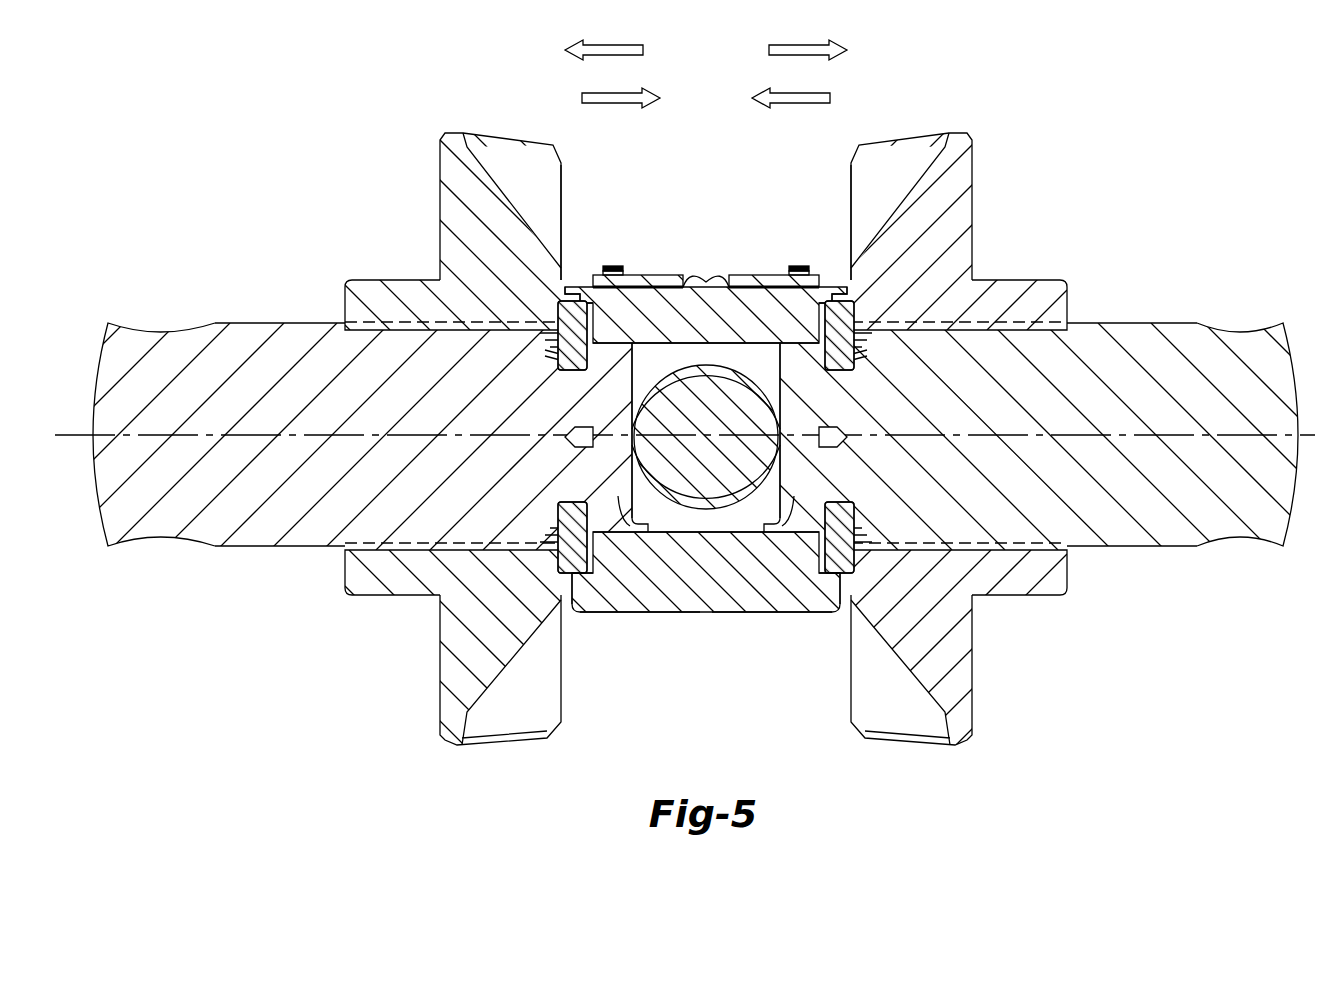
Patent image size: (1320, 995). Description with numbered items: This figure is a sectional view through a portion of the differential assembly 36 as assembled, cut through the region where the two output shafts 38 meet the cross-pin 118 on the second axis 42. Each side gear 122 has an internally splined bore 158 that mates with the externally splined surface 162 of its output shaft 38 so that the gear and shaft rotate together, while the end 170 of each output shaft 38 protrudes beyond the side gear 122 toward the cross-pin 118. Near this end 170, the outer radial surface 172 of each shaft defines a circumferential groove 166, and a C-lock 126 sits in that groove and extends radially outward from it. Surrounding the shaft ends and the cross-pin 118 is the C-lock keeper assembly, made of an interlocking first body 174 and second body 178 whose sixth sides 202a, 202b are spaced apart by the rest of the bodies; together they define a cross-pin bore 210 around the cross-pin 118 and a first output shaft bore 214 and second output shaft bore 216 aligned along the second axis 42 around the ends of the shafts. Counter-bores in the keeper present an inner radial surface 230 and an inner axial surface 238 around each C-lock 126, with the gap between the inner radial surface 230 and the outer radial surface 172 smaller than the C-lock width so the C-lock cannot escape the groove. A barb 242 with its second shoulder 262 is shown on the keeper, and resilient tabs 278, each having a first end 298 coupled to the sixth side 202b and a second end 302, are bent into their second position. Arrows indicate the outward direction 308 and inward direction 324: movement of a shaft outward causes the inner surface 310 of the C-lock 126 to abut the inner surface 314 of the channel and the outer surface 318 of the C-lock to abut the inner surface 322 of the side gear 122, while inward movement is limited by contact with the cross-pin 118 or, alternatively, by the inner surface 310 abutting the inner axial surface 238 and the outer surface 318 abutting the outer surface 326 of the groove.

The differential assembly 36 is at (334, 690).
The output shaft 38 is at (163, 352).
The second axis 42 is at (70, 435).
The cross-pin 118 is at (745, 500).
The side gear 122 is at (445, 650).
The C-lock 126 is at (567, 563).
The internally splined bore 158 is at (396, 324).
The externally splined surface 162 is at (235, 548).
The circumferential groove 166 is at (566, 436).
The end of output shaft 170 is at (640, 534).
The outer radial surface 172 is at (612, 512).
The first body 174 is at (630, 612).
The second body 178 is at (678, 332).
The sixth side of male body 202a is at (670, 612).
The sixth side of female body 202b is at (704, 290).
The cross-pin bore 210 is at (688, 534).
The first output shaft bore 214 is at (633, 388).
The second output shaft bore 216 is at (772, 390).
The inner radial surface 230 is at (575, 616).
The inner axial surface 238 is at (625, 571).
The barb 242 is at (614, 265).
The second shoulder 262 is at (610, 296).
The tab 278 is at (640, 274).
The first end of tab 298 is at (706, 276).
The second end of tab 302 is at (580, 285).
The outward direction 308 is at (767, 47).
The inner surface of C-lock 310 is at (625, 342).
The inner surface of circumferential channel 314 is at (580, 373).
The outer surface of C-lock 318 is at (552, 320).
The inner surface of side gear 322 is at (578, 272).
The inward direction 324 is at (750, 92).
The outer surface of circumferential groove 326 is at (558, 354).